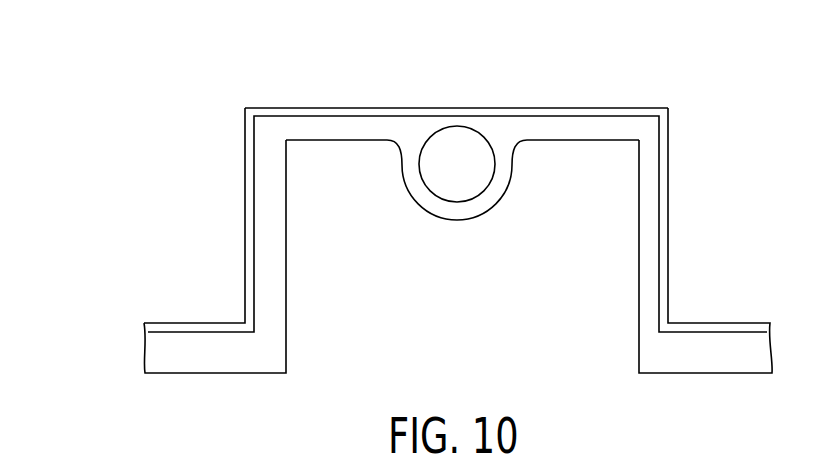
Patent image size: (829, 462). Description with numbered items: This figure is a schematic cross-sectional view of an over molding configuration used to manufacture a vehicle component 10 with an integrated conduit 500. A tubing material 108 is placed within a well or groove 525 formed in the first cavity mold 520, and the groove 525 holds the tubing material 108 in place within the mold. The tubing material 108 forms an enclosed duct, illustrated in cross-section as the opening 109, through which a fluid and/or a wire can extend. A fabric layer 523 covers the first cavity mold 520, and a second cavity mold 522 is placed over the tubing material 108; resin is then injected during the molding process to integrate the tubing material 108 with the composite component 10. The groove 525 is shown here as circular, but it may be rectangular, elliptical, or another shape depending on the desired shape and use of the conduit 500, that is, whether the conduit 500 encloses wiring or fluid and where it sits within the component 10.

The component 10 is at (88, 98).
The conduit 500 is at (223, 155).
The fabric layer 523 is at (320, 107).
The second cavity mold 522 is at (668, 128).
The first cavity mold 520 is at (546, 143).
The groove 525 is at (458, 228).
The tubing material 108 is at (482, 194).
The opening 109 is at (447, 168).